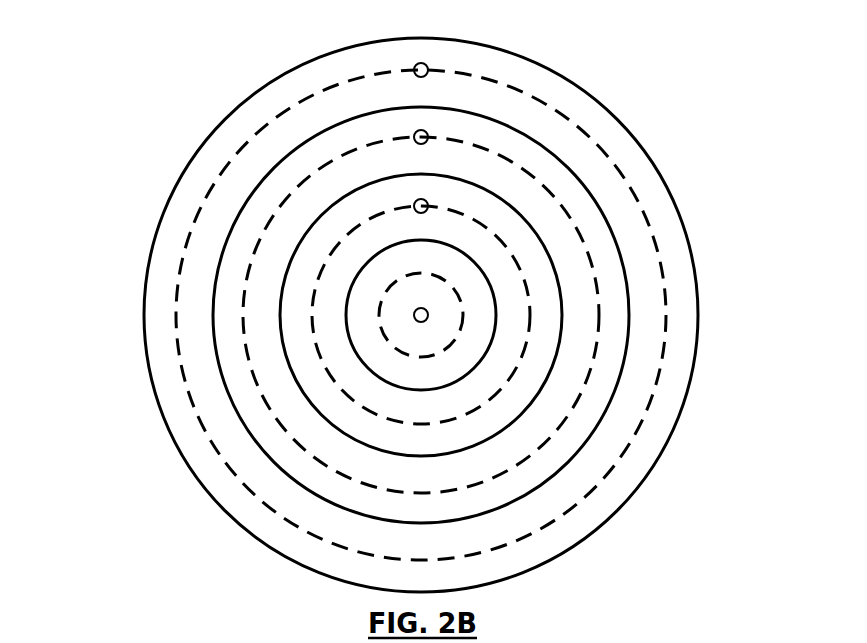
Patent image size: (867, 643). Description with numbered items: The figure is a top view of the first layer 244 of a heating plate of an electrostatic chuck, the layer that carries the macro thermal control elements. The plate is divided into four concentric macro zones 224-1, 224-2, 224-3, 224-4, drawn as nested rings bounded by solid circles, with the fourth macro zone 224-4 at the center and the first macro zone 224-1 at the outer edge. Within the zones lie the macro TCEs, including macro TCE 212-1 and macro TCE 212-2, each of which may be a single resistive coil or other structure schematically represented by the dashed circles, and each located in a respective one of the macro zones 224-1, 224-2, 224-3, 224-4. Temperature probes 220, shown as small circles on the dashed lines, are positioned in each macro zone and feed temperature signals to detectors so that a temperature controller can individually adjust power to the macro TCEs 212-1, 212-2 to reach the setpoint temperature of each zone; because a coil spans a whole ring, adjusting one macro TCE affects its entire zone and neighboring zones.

The first layer 244 is at (517, 53).
The macro TCE 212-1 is at (297, 106).
The macro TCE 212-2 is at (272, 222).
The temperature probe 220 is at (415, 65).
The macro zone 224-1 is at (637, 167).
The macro zone 224-2 is at (610, 275).
The macro zone 224-3 is at (543, 365).
The macro zone 224-4 is at (455, 358).